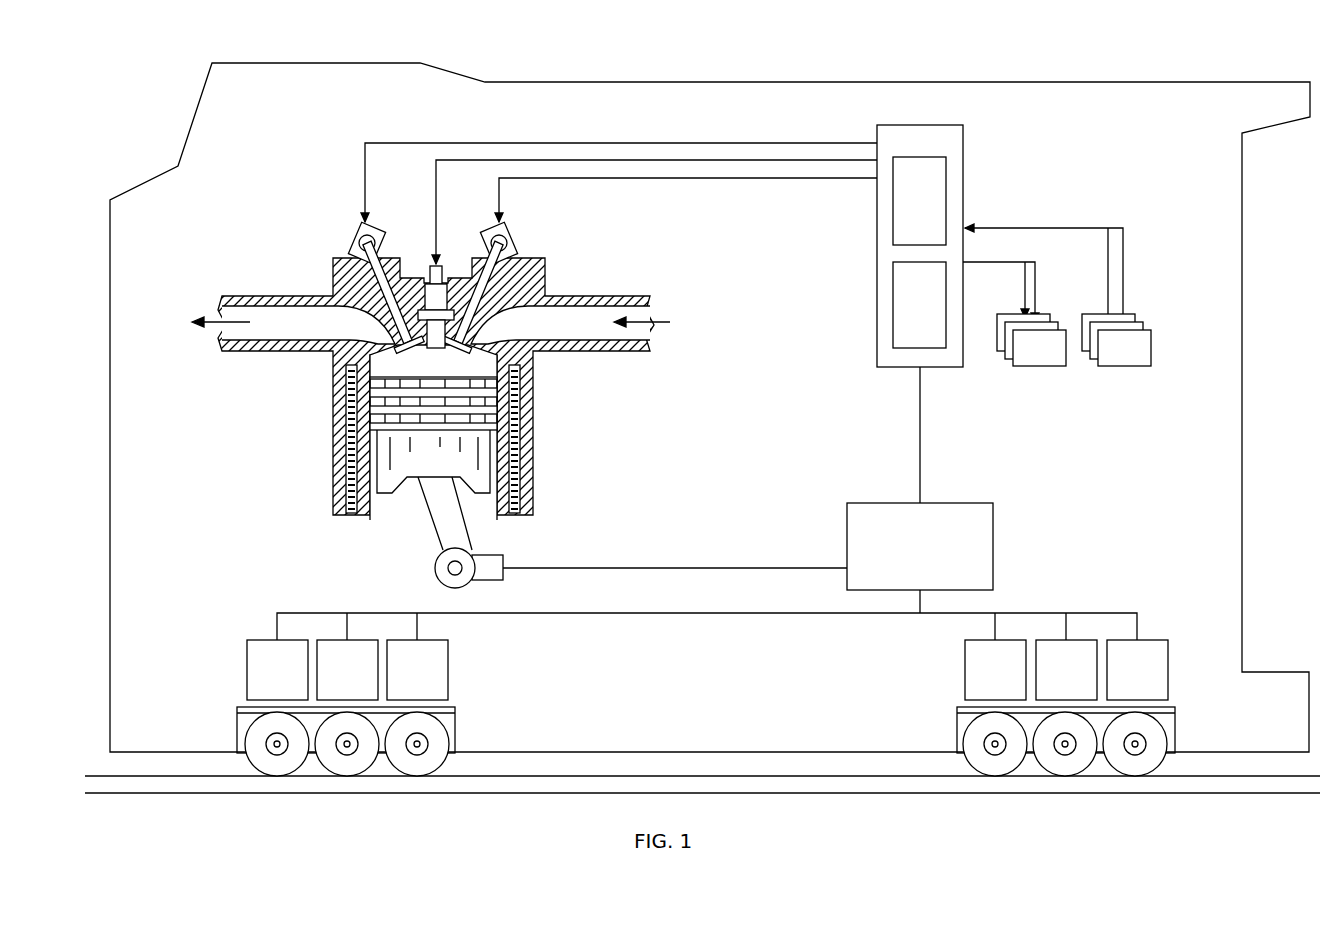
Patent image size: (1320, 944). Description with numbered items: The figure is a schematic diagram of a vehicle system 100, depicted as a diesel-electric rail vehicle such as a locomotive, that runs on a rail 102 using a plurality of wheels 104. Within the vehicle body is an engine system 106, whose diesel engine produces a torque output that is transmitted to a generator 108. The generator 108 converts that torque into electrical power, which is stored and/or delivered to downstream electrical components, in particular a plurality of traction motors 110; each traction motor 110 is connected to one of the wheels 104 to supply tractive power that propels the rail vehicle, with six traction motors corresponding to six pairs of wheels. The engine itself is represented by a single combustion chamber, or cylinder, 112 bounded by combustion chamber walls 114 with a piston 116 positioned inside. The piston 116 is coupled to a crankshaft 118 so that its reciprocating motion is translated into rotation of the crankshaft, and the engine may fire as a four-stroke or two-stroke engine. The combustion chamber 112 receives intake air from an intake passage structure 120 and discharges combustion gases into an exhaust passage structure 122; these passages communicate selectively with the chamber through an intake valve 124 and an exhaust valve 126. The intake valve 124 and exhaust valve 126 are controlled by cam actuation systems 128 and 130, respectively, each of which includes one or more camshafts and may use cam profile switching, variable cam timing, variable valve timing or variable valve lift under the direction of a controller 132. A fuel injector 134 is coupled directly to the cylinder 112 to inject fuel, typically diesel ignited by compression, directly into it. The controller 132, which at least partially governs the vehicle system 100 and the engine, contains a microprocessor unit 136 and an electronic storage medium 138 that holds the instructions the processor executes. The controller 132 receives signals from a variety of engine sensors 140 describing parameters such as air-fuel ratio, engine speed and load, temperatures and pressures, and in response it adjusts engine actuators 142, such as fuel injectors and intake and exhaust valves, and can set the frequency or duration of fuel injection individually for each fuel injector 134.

The vehicle system 100 is at (128, 96).
The rail 102 is at (1242, 798).
The wheels 104 is at (440, 736).
The engine system 106 is at (257, 188).
The generator 108 is at (938, 557).
The traction motors 110 is at (296, 681).
The combustion chamber 112 is at (450, 376).
The combustion chamber walls 114 is at (364, 512).
The piston 116 is at (418, 462).
The crankshaft 118 is at (472, 558).
The intake passage structure 120 is at (580, 333).
The exhaust passage structure 122 is at (332, 333).
The intake valve 124 is at (492, 320).
The exhaust valve 126 is at (350, 302).
The cam actuation system 128 is at (492, 232).
The cam actuation system 130 is at (374, 232).
The controller 132 is at (938, 147).
The fuel injector 134 is at (441, 265).
The microprocessor unit 136 is at (938, 211).
The electronic storage medium 138 is at (938, 314).
The engine sensors 140 is at (1058, 295).
The engine actuators 142 is at (1014, 314).